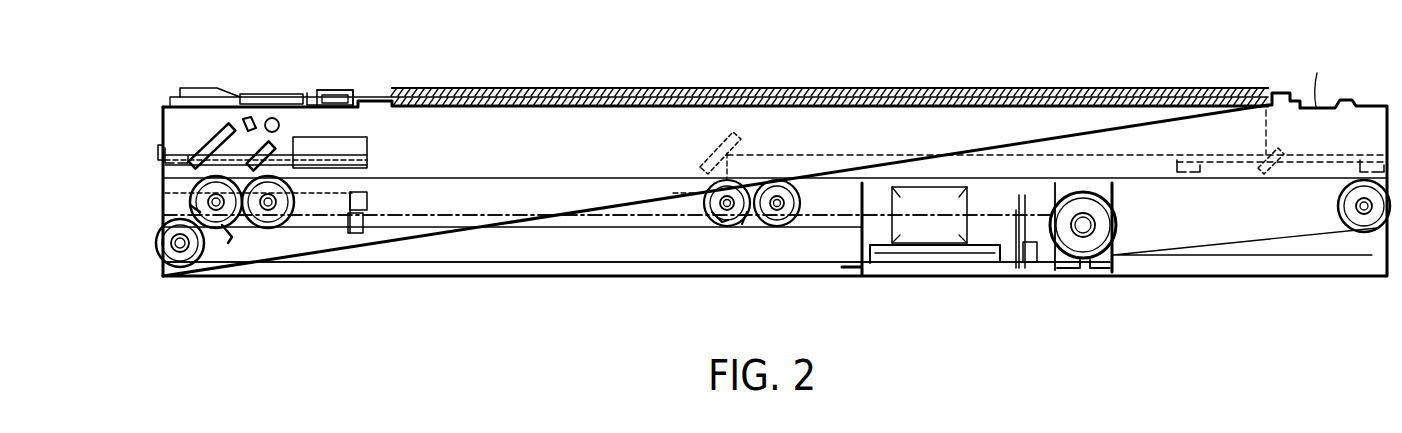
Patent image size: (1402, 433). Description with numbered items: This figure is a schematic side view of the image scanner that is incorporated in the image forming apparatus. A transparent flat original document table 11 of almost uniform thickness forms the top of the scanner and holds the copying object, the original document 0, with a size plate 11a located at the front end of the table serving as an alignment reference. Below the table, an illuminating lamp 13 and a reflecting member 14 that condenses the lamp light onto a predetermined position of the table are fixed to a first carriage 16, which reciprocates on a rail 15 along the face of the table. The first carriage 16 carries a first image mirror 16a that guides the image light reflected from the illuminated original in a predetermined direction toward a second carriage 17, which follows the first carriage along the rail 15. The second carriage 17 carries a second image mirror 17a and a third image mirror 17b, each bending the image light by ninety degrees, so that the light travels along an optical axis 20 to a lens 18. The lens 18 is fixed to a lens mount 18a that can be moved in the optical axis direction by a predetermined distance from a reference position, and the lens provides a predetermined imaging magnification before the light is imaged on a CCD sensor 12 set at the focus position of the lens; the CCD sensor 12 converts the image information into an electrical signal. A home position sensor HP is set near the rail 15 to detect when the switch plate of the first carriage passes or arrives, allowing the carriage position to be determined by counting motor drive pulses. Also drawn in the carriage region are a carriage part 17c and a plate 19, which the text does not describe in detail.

The original document 0 is at (653, 88).
The original document table 11 is at (520, 88).
The size plate 11a is at (320, 100).
The CCD sensor 12 is at (1017, 260).
The illuminating lamp 13 is at (275, 118).
The reflecting member 14 is at (247, 117).
The rail 15 is at (522, 220).
The first carriage 16 is at (367, 160).
The first image mirror 16a is at (252, 222).
The second carriage 17 is at (328, 210).
The second image mirror 17a is at (205, 140).
The third image mirror 17b is at (222, 245).
The carriage engaging portion 17c is at (367, 201).
The lens 18 is at (908, 243).
The lens mount 18a is at (977, 255).
The white reference plate 19 is at (300, 102).
The optical axis 20 is at (590, 225).
The home position sensor HP is at (367, 233).